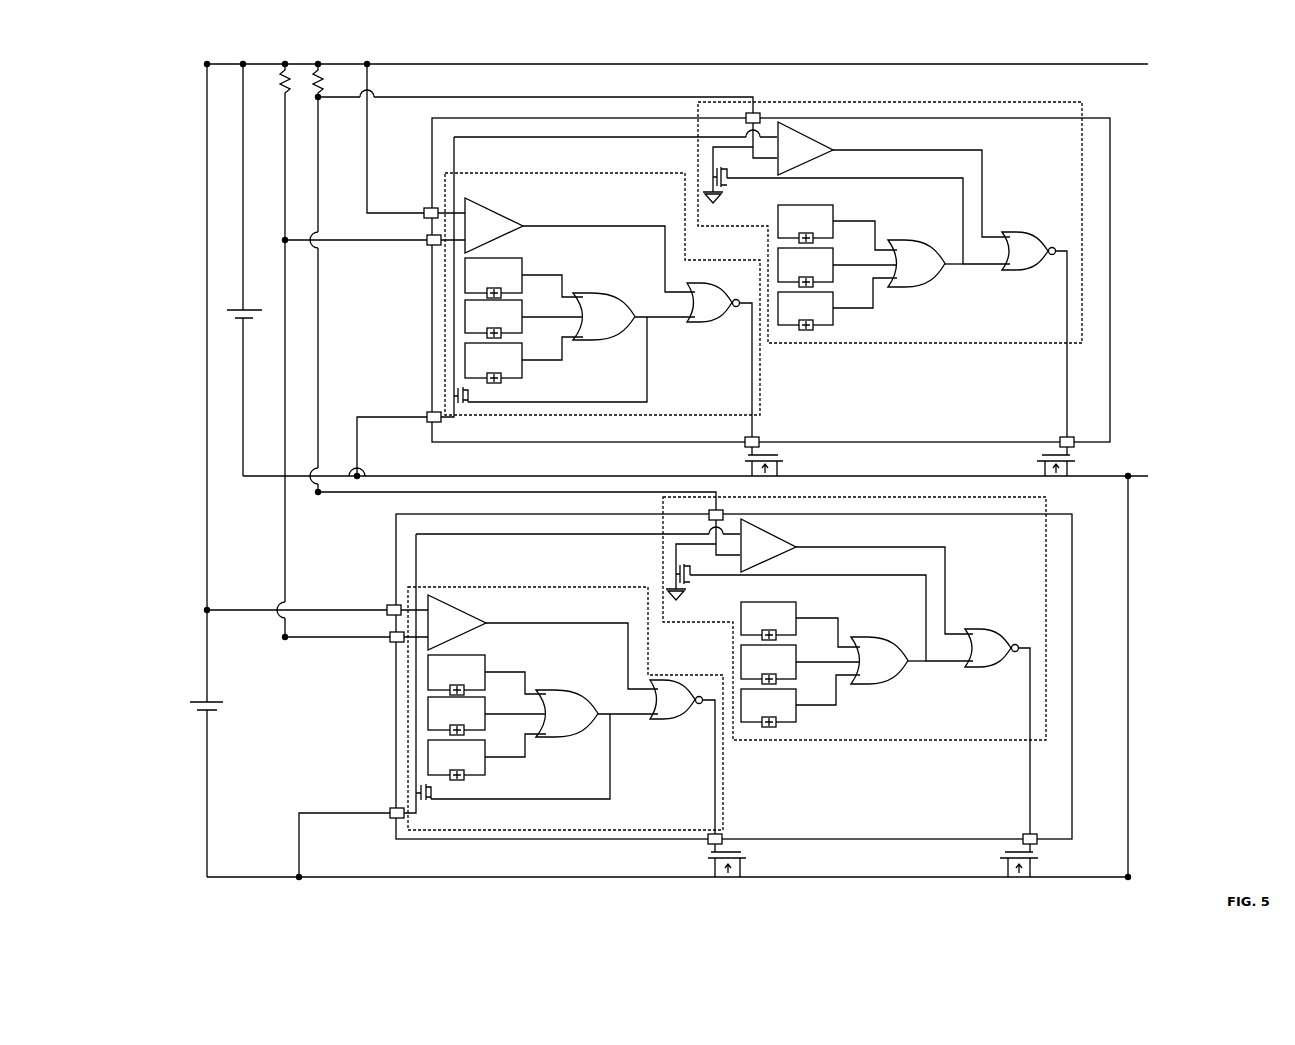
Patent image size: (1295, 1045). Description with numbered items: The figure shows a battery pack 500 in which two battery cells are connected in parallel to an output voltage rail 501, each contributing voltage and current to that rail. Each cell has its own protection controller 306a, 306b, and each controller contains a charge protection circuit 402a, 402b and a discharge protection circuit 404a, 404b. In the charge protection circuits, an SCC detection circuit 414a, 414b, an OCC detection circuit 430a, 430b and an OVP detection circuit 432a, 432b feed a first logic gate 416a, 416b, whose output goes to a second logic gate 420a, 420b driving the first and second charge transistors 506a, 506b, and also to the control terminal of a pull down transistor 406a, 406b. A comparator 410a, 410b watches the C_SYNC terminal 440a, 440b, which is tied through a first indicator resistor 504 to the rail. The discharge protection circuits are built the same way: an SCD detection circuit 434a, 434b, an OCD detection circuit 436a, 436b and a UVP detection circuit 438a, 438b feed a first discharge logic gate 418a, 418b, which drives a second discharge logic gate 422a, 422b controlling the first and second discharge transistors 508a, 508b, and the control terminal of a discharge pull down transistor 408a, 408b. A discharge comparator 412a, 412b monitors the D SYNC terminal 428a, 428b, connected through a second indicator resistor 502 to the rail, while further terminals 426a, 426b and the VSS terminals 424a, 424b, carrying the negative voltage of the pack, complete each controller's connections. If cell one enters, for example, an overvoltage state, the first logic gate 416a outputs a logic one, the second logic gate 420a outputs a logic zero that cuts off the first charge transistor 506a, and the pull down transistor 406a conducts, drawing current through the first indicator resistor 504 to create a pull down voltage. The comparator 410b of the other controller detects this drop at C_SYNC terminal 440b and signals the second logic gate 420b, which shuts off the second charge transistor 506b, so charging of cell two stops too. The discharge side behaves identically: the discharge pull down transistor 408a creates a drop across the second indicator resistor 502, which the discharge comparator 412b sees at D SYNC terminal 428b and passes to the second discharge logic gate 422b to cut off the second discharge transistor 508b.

The battery pack 500 is at (1288, 58).
The output voltage rail 501 is at (995, 63).
The second indicator resistor 502 is at (282, 78).
The first indicator resistor 504 is at (322, 72).
The protection controller 306a is at (1110, 267).
The protection controller 306b is at (1072, 635).
The charge protection circuit 402a is at (1048, 103).
The charge protection circuit 402b is at (1046, 596).
The discharge protection circuit 404a is at (682, 414).
The discharge protection circuit 404b is at (637, 829).
The pull down transistor 406a is at (712, 180).
The pull down transistor 406b is at (676, 578).
The discharge pull down transistor 408a is at (456, 395).
The discharge pull down transistor 408b is at (421, 792).
The comparator 410a is at (894, 179).
The comparator 410b is at (857, 576).
The discharge comparator 412a is at (580, 245).
The discharge comparator 412b is at (543, 642).
The SCC detection circuit 414a is at (837, 227).
The SCC detection circuit 414b is at (800, 624).
The first logic gate 416a is at (925, 263).
The first logic gate 416b is at (888, 660).
The first discharge logic gate 418a is at (581, 347).
The first discharge logic gate 418b is at (544, 744).
The second logic gate 420a is at (1034, 334).
The second logic gate 420b is at (997, 731).
The second discharge logic gate 422a is at (719, 360).
The second discharge logic gate 422b is at (682, 757).
The VSS terminal 424a is at (427, 417).
The VSS terminal 424b is at (390, 813).
The sense terminal 426a is at (424, 212).
The sense terminal 426b is at (389, 608).
The D SYNC terminal 428a is at (427, 245).
The D SYNC terminal 428b is at (390, 642).
The OCC detection circuit 430a is at (837, 267).
The OCC detection circuit 430b is at (800, 664).
The OVP detection circuit 432a is at (837, 304).
The OVP detection circuit 432b is at (800, 701).
The SCD detection circuit 434a is at (524, 278).
The SCD detection circuit 434b is at (487, 675).
The OCD detection circuit 436a is at (524, 319).
The OCD detection circuit 436b is at (487, 716).
The UVP detection circuit 438a is at (524, 360).
The UVP detection circuit 438b is at (487, 757).
The C_SYNC terminal 440a is at (750, 113).
The C_SYNC terminal 440b is at (710, 515).
The first charge transistor 506a is at (1072, 485).
The second charge transistor 506b is at (1025, 880).
The first discharge transistor 508a is at (780, 470).
The second discharge transistor 508b is at (735, 880).